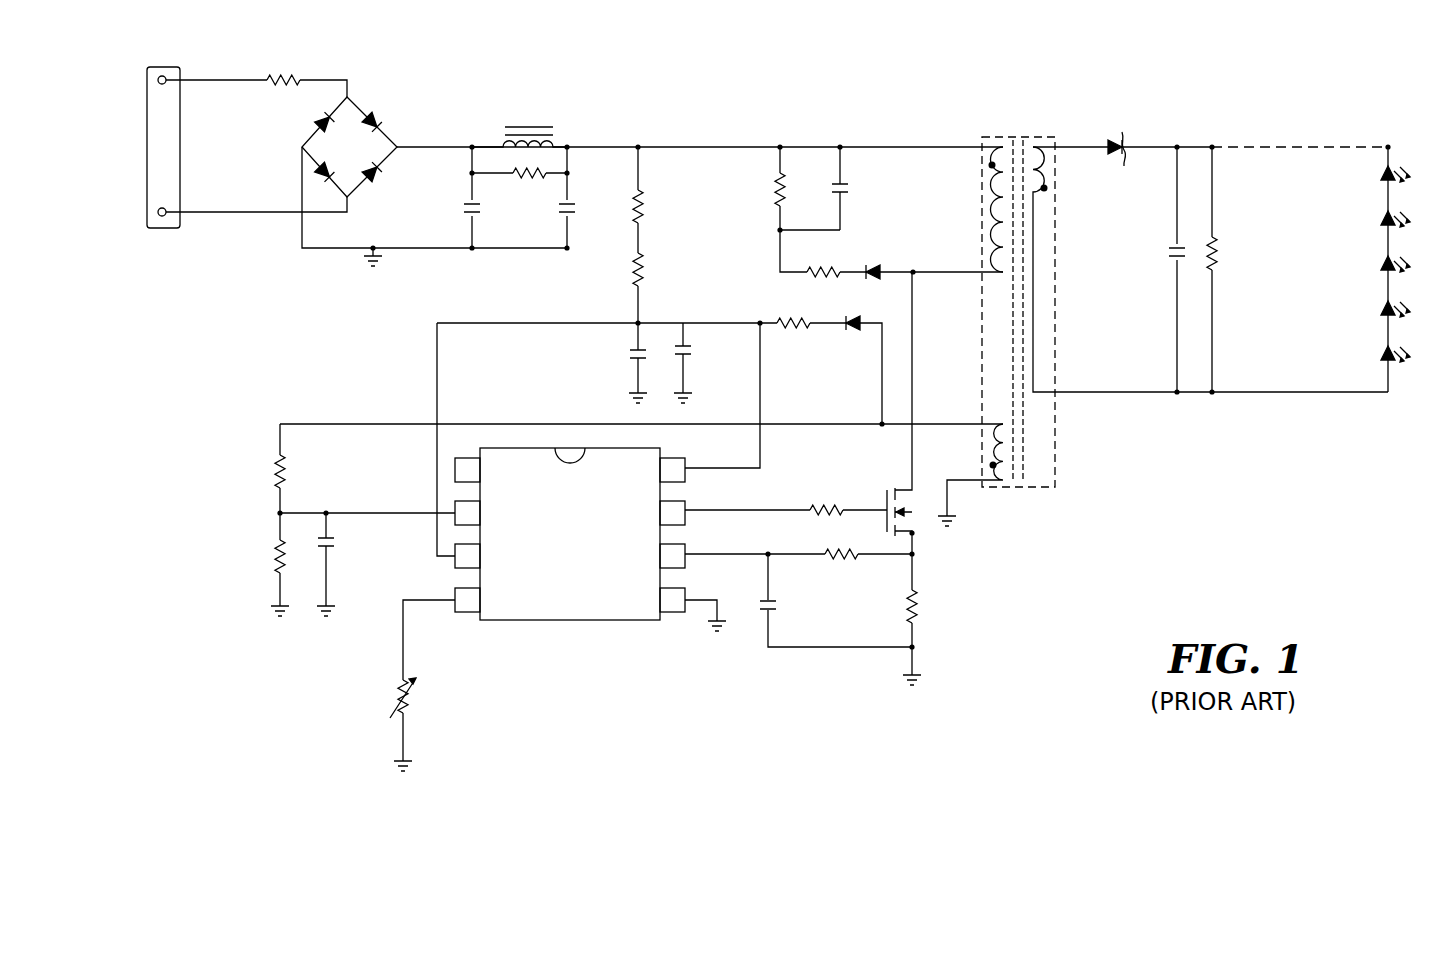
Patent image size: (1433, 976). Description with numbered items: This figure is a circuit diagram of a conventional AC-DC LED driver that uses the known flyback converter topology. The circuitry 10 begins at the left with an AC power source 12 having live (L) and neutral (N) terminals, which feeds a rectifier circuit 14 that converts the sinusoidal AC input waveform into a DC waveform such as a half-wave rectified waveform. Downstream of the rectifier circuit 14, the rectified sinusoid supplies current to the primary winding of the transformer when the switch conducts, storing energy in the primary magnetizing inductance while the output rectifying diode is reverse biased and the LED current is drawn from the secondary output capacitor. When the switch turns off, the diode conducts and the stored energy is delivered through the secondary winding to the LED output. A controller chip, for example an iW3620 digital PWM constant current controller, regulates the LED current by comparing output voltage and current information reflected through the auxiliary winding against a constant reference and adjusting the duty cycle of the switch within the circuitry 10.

The circuitry 10 is at (852, 55).
The AC power source 12 is at (158, 66).
The rectifier circuit 14 is at (380, 110).